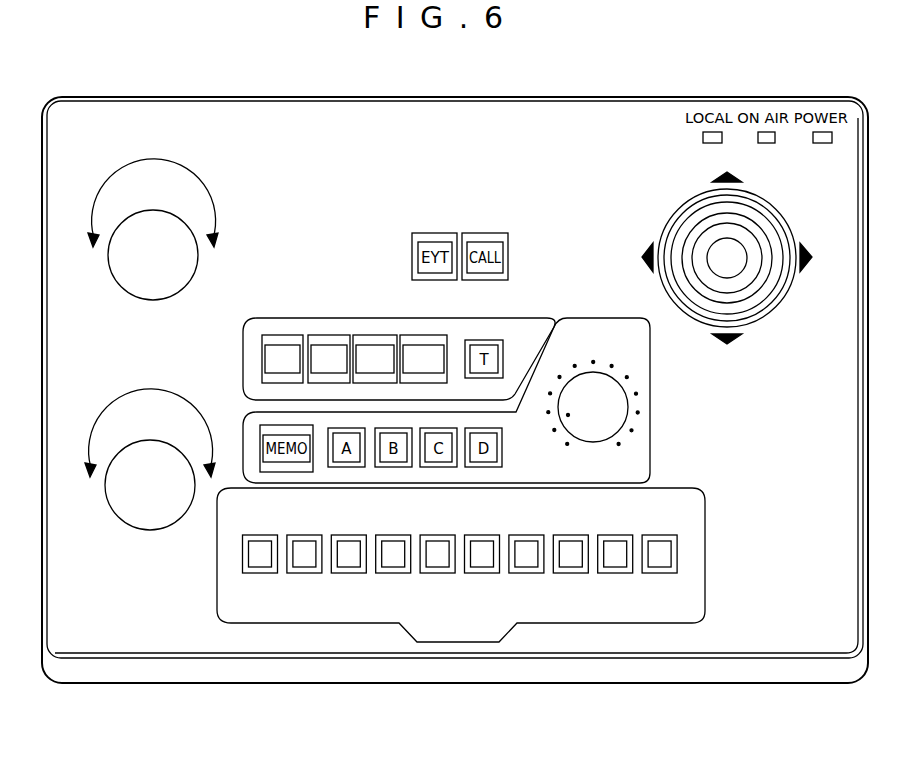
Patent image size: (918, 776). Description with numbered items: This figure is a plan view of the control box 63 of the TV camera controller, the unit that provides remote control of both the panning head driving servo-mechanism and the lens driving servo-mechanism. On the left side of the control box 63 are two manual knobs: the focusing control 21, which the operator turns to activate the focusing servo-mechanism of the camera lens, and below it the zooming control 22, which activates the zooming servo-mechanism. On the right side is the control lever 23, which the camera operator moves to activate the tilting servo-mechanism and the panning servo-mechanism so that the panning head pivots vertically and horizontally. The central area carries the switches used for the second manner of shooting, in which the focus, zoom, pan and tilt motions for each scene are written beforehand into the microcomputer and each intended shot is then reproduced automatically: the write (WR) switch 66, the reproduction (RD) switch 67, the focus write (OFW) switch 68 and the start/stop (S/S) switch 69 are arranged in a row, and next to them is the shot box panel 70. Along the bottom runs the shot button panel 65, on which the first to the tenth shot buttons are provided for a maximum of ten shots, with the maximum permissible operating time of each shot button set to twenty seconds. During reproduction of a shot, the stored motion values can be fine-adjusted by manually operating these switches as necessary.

The focusing control 21 is at (190, 278).
The zooming control 22 is at (123, 517).
The control lever 23 is at (729, 258).
The control box 63 is at (782, 693).
The shot button panel 65 is at (720, 568).
The write (WR) switch 66 is at (283, 347).
The reproduction (RD) switch 67 is at (332, 347).
The focus write (OFW) switch 68 is at (385, 345).
The start/stop (S/S) switch 69 is at (432, 345).
The shot box panel 70 is at (663, 414).